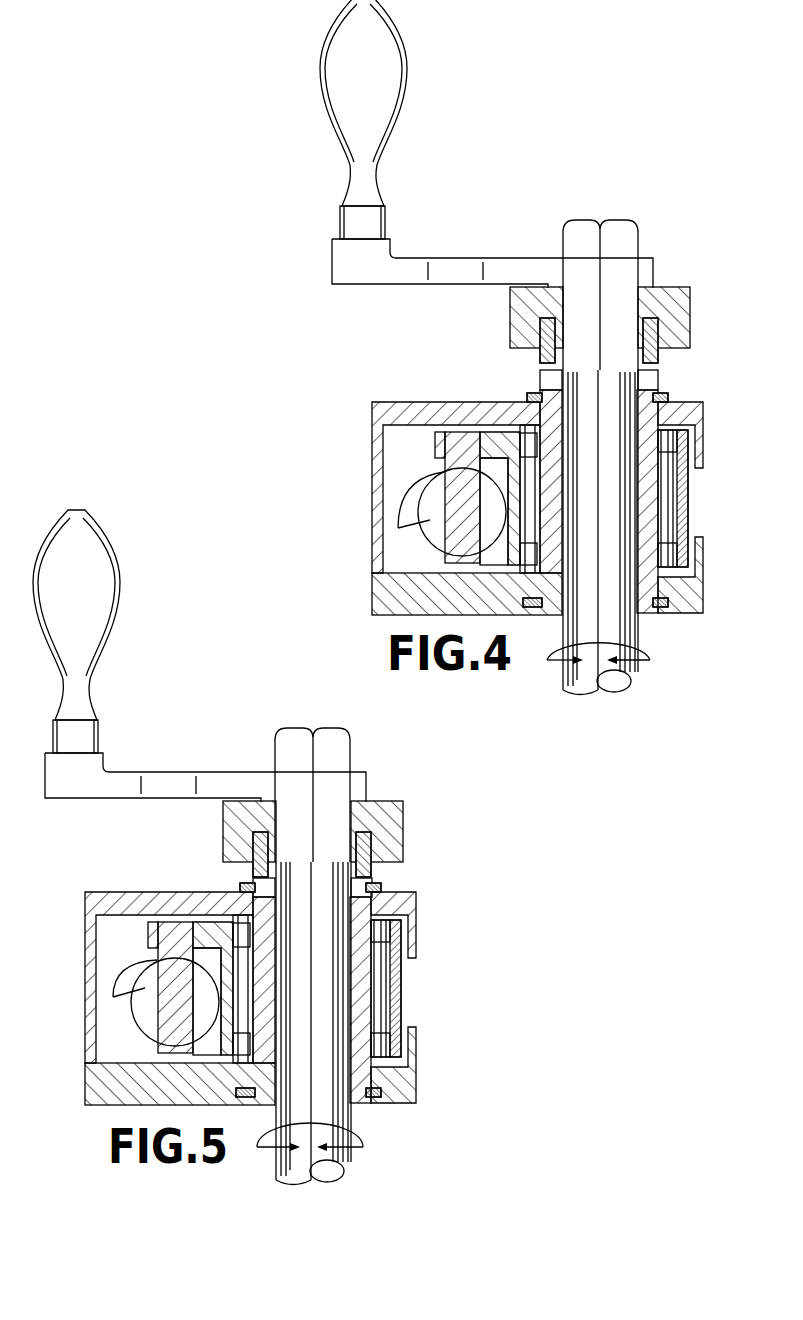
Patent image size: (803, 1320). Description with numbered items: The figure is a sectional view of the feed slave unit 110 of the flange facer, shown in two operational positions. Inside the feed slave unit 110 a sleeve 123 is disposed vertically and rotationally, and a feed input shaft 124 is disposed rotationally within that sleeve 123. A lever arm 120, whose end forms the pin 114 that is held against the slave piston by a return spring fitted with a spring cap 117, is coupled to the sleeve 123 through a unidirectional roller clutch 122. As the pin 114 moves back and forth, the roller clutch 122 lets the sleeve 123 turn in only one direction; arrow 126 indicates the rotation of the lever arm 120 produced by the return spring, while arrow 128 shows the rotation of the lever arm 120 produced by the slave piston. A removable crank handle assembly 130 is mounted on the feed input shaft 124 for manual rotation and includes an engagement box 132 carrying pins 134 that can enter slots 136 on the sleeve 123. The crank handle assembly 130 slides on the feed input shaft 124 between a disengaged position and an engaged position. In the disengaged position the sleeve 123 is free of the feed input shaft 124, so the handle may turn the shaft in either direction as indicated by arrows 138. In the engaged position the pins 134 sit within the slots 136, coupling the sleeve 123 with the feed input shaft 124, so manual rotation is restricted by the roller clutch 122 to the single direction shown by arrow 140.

In FIG. 4, the feed slave unit 110 is at (361, 546).
In FIG. 5, the feed slave unit 110 is at (74, 1025).
In FIG. 4, the pin 114 is at (452, 445).
In FIG. 5, the pin 114 is at (167, 937).
In FIG. 4, the spring cap 117 is at (581, 541).
In FIG. 5, the spring cap 117 is at (294, 1030).
In FIG. 4, the lever arm 120 is at (498, 440).
In FIG. 5, the lever arm 120 is at (205, 932).
In FIG. 4, the unidirectional roller clutch 122 is at (677, 552).
In FIG. 5, the unidirectional roller clutch 122 is at (390, 1043).
In FIG. 4, the sleeve 123 is at (643, 612).
In FIG. 5, the sleeve 123 is at (358, 1105).
In FIG. 4, the feed input shaft 124 is at (590, 220).
In FIG. 5, the feed input shaft 124 is at (313, 728).
In FIG. 4, the arrow 126 is at (398, 528).
In FIG. 5, the arrow 126 is at (113, 997).
In FIG. 4, the arrow 128 is at (614, 541).
In FIG. 5, the arrow 128 is at (327, 1030).
In FIG. 4, the crank handle assembly 130 is at (387, 190).
In FIG. 5, the crank handle assembly 130 is at (101, 693).
In FIG. 4, the engagement box 132 is at (680, 288).
In FIG. 5, the engagement box 132 is at (402, 802).
In FIG. 4, the pins 134 is at (540, 355).
In FIG. 5, the pins 134 is at (252, 870).
In FIG. 4, the slots 136 is at (540, 381).
In FIG. 5, the slots 136 is at (255, 883).
In FIG. 4, the arrows 138 is at (647, 647).
In FIG. 5, the arrow 140 is at (363, 1133).